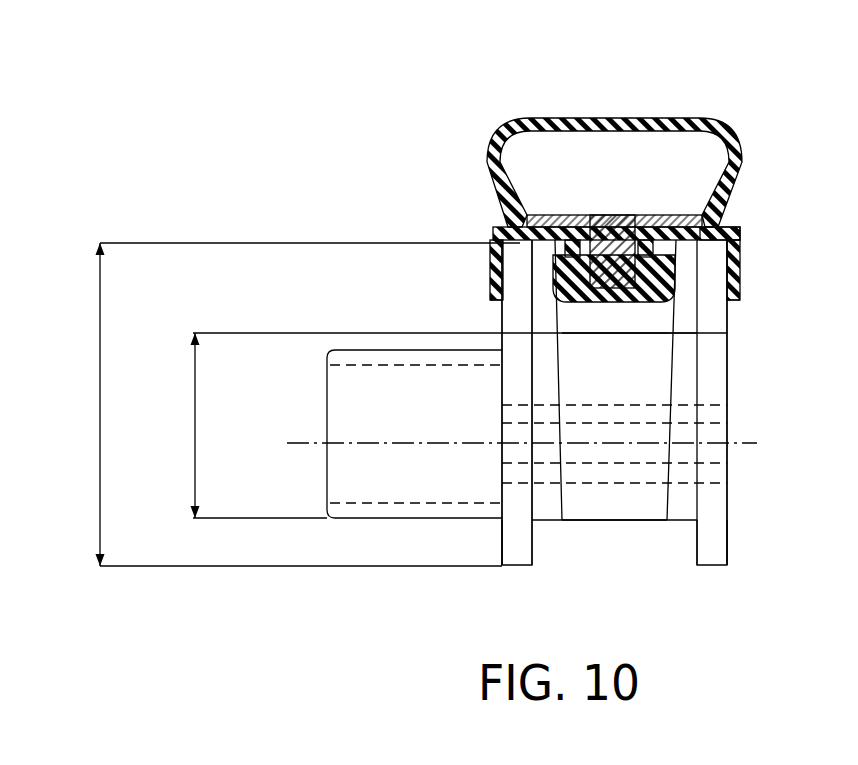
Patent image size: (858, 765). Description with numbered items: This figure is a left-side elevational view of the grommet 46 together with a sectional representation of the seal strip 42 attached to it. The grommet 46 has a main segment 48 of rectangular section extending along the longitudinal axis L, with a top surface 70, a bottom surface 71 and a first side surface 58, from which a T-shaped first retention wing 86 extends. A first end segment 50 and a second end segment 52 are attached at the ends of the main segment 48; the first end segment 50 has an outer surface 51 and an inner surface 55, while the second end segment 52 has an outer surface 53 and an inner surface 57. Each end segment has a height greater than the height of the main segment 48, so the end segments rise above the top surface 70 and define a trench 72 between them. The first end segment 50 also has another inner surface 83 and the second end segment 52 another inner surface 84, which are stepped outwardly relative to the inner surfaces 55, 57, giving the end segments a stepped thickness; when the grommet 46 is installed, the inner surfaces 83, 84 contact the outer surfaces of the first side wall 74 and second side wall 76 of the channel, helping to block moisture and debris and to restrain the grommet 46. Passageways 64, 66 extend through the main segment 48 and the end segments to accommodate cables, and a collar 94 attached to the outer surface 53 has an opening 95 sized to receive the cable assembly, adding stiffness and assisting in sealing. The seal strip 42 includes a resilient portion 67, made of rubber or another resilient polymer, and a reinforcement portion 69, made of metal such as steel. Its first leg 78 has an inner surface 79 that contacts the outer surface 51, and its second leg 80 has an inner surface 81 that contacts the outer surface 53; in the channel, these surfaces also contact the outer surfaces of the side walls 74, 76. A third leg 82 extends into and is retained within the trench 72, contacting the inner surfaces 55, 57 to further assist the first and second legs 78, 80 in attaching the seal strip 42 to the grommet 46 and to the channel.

The seal strip 42 is at (590, 176).
The grommet 46 is at (466, 332).
The main segment 48 is at (550, 383).
The first end segment 50 is at (714, 550).
The outer surface 51 is at (732, 298).
The second end segment 52 is at (520, 495).
The outer surface 53 is at (500, 302).
The inner surface 55 is at (652, 322).
The inner surface 57 is at (560, 322).
The first side surface 58 is at (548, 505).
The passageway 64 is at (718, 478).
The passageway 66 is at (718, 413).
The resilient portion 67 is at (644, 118).
The reinforcement portion 69 is at (630, 215).
The top surface 70 is at (622, 333).
The bottom surface 71 is at (634, 522).
The trench 72 is at (617, 350).
The first side wall 74 is at (716, 310).
The second side wall 76 is at (512, 323).
The first leg 78 is at (735, 266).
The inner surface 79 is at (712, 256).
The second leg 80 is at (493, 267).
The inner surface 81 is at (498, 256).
The third leg 82 is at (593, 325).
The inner surface 83 is at (697, 551).
The inner surface 84 is at (533, 552).
The first retention wing 86 is at (605, 508).
The collar 94 is at (355, 518).
The opening 95 is at (394, 503).